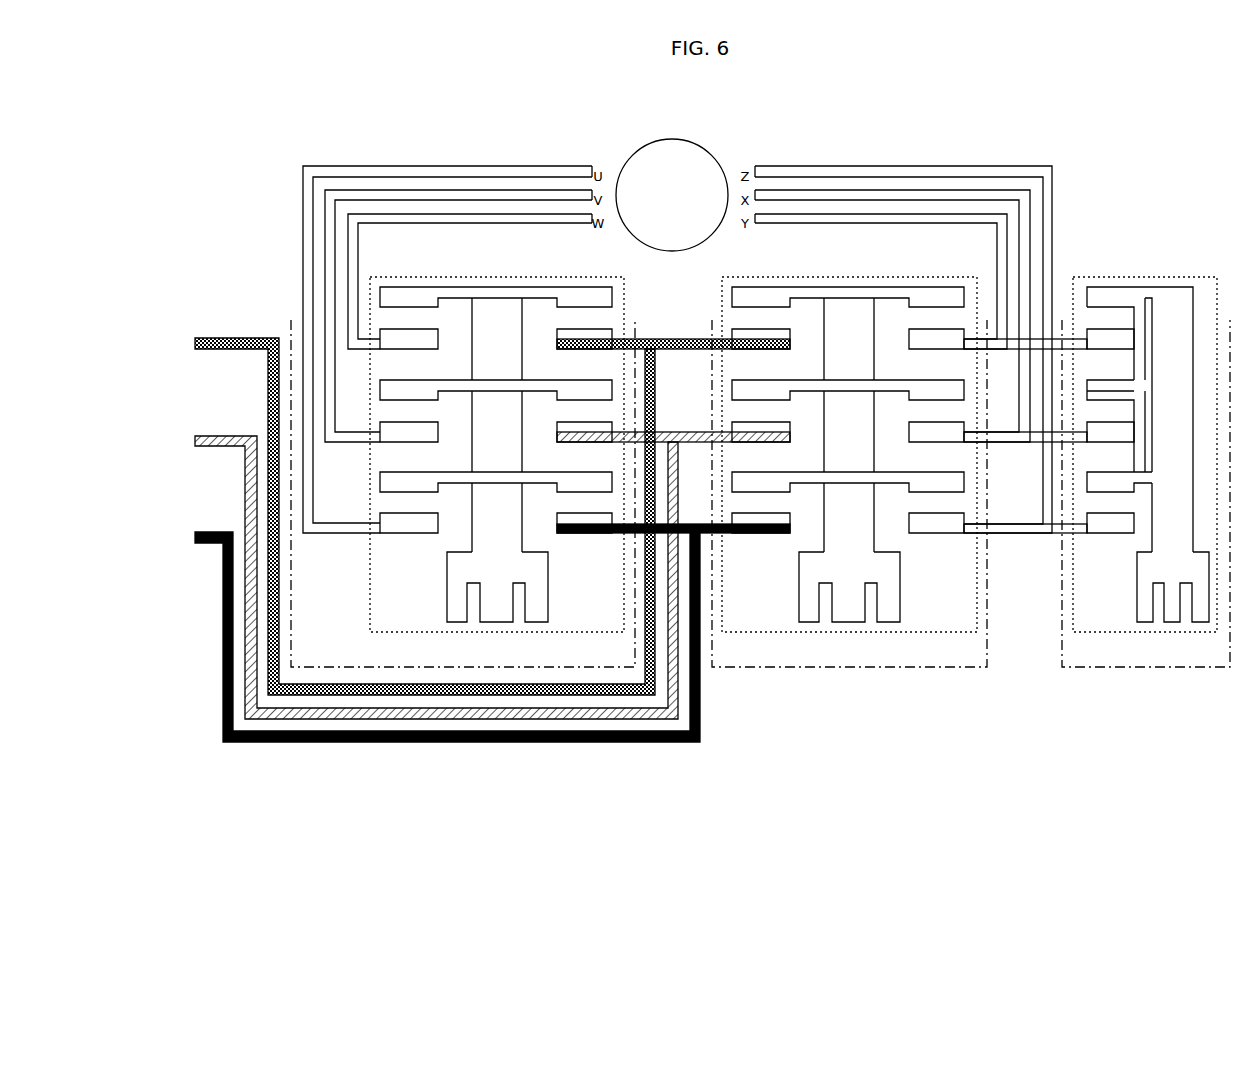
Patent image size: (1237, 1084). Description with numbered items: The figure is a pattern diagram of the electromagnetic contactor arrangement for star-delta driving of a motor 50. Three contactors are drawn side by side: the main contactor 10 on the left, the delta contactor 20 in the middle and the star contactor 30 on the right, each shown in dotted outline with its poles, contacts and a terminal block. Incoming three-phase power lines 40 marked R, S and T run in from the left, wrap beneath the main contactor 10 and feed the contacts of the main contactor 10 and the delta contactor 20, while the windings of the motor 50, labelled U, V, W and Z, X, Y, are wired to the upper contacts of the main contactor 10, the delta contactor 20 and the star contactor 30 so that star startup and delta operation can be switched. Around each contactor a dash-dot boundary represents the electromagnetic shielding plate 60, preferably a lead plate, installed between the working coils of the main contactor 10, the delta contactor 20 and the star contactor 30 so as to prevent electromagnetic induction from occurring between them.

The MCM 10 is at (430, 633).
The MCD 20 is at (798, 633).
The MCY 30 is at (1118, 633).
The power bus bar wiring (R, S, T) 40 is at (616, 760).
The motor 50 is at (711, 152).
The electromagnetic shielding plate 60 is at (348, 668).